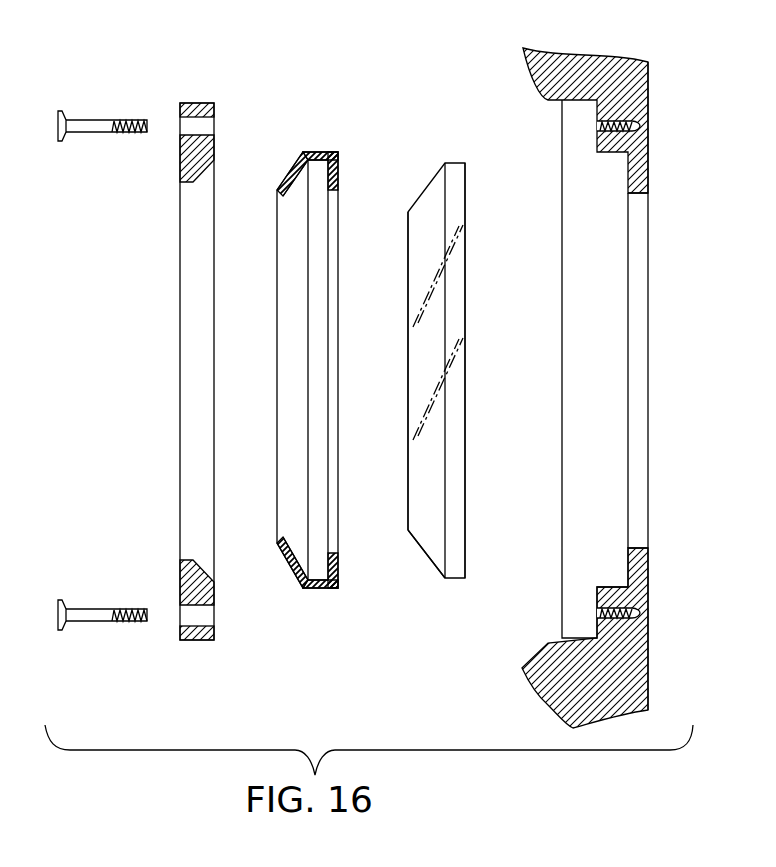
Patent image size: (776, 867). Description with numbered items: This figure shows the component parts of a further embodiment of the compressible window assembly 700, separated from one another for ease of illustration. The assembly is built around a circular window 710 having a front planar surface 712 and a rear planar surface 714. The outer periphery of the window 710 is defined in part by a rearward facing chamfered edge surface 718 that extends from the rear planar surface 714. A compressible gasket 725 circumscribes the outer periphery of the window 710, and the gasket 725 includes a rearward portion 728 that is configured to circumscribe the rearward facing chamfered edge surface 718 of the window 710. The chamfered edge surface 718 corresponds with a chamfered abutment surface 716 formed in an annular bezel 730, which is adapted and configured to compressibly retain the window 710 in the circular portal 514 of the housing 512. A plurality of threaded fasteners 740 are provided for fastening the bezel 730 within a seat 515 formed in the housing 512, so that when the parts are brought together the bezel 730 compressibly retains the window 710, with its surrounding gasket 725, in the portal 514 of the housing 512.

The compressible window assembly 700 is at (396, 100).
The circular window 710 is at (427, 180).
The front planar surface 712 is at (467, 278).
The rear planar surface 714 is at (410, 331).
The rearward facing chamfered edge surface 718 is at (426, 549).
The compressible gasket 725 is at (317, 152).
The rearward portion 728 is at (288, 569).
The annular bezel 730 is at (200, 103).
The chamfered abutment surface 716 is at (203, 578).
The threaded fasteners 740 is at (92, 121).
The housing 512 is at (580, 70).
The circular portal 514 is at (632, 240).
The seat 515 is at (597, 603).